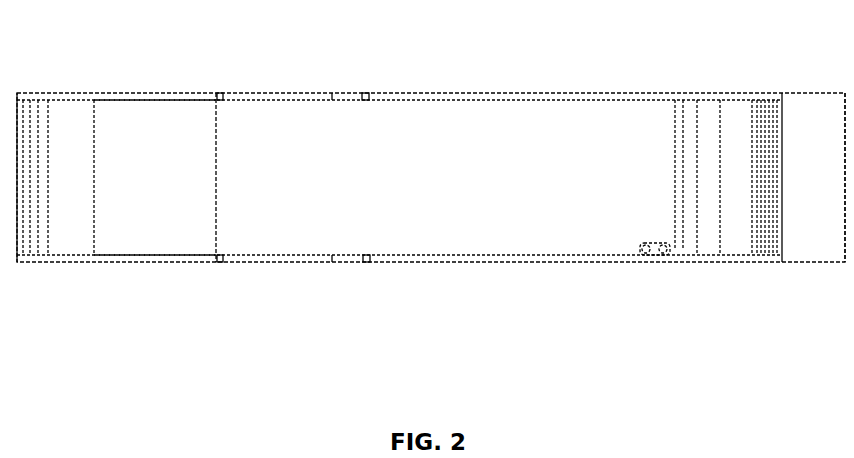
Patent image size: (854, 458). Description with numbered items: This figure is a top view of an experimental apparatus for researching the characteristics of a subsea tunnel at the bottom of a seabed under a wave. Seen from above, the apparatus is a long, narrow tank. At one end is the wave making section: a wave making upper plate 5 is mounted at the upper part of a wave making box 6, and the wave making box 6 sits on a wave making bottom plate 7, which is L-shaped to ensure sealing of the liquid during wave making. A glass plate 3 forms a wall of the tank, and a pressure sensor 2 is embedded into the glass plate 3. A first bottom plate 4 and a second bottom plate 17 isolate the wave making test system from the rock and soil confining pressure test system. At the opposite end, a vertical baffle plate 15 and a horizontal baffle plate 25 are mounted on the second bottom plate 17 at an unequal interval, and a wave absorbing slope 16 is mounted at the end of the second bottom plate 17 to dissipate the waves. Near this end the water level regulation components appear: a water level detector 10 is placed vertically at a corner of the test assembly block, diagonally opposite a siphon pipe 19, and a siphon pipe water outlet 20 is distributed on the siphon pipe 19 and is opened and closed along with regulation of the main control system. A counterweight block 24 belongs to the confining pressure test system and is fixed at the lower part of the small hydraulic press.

The pressure sensor 2 is at (218, 94).
The glass plate 3 is at (258, 257).
The first bottom plate 4 is at (138, 122).
The wave making upper plate 5 is at (34, 253).
The wave making box 6 is at (42, 130).
The wave making bottom plate 7 is at (73, 130).
The water level detector 10 is at (239, 97).
The vertical baffle plate 15 is at (722, 248).
The wave absorbing slope 16 is at (754, 100).
The second bottom plate 17 is at (712, 118).
The siphon pipe 19 is at (667, 256).
The siphon pipe water outlet 20 is at (645, 258).
The counterweight block 24 is at (806, 115).
The horizontal baffle plate 25 is at (700, 252).